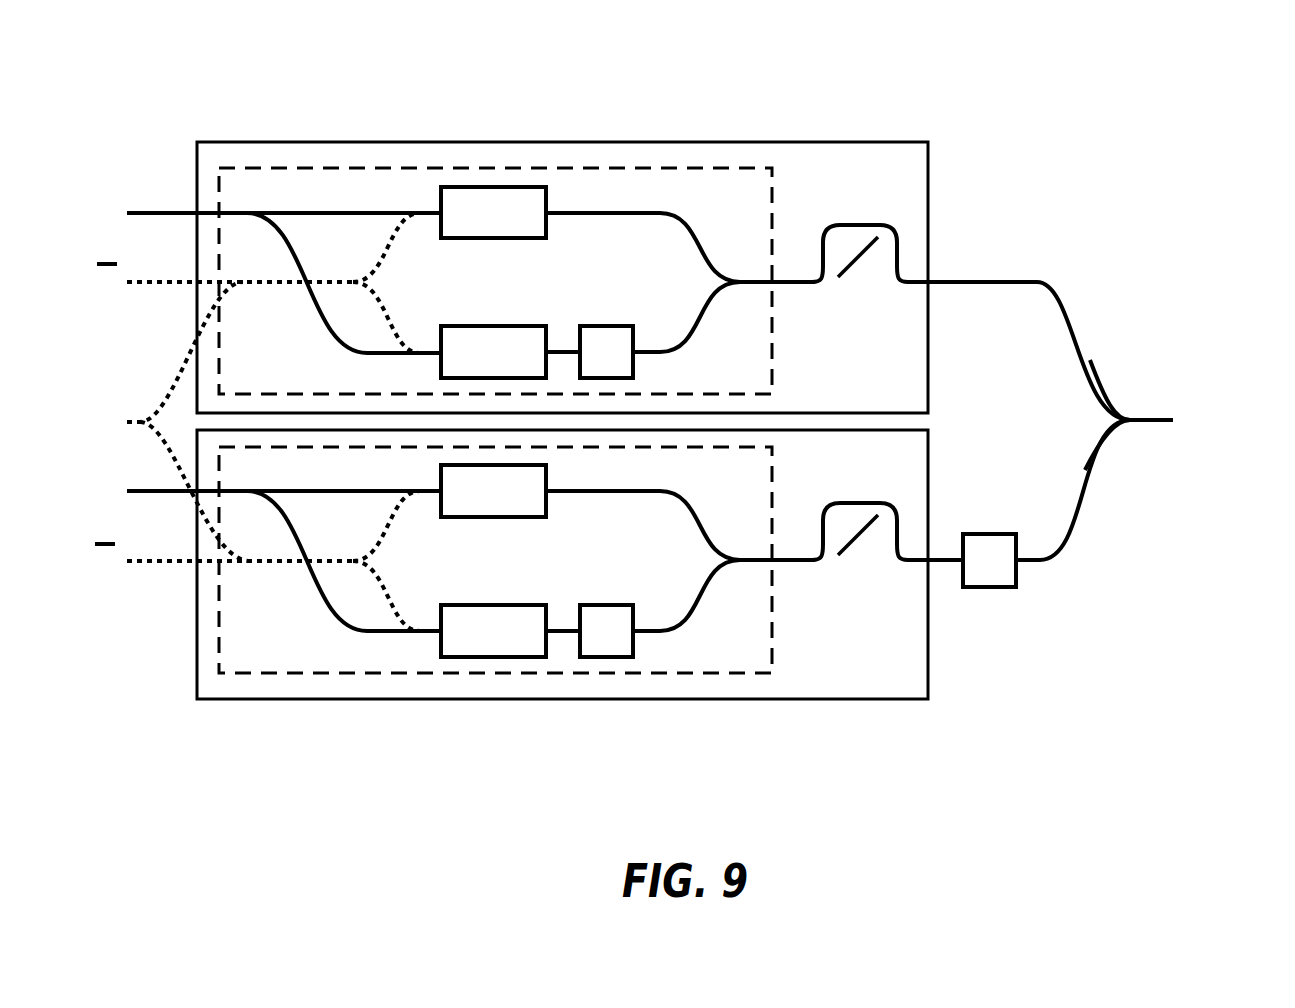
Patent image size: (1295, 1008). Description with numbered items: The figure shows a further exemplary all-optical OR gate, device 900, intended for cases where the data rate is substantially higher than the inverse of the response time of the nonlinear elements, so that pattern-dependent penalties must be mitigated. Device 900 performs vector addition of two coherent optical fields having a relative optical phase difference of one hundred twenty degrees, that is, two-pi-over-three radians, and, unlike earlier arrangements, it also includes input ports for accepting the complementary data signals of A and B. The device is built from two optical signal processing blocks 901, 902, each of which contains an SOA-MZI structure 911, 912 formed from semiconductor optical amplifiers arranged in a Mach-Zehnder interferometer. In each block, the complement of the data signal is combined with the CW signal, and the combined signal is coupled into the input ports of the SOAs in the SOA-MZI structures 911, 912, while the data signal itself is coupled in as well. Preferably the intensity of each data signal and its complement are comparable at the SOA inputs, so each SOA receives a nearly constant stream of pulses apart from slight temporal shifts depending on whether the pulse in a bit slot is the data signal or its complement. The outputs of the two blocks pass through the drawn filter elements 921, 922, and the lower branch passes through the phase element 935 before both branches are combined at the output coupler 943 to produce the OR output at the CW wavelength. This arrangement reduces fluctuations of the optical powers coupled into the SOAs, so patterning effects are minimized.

The device 900 is at (664, 397).
The optical signal processing block 901 is at (562, 238).
The optical signal processing block 902 is at (562, 604).
The SOA-MZI structure 911 is at (517, 242).
The SOA-MZI structure 912 is at (517, 599).
The first optical filter blocking wavelength A 921 is at (860, 223).
The second optical filter blocking wavelength B 922 is at (860, 500).
The 2pi/3 phase shifter 935 is at (990, 584).
The optical combiner / output coupler 943 is at (1129, 405).